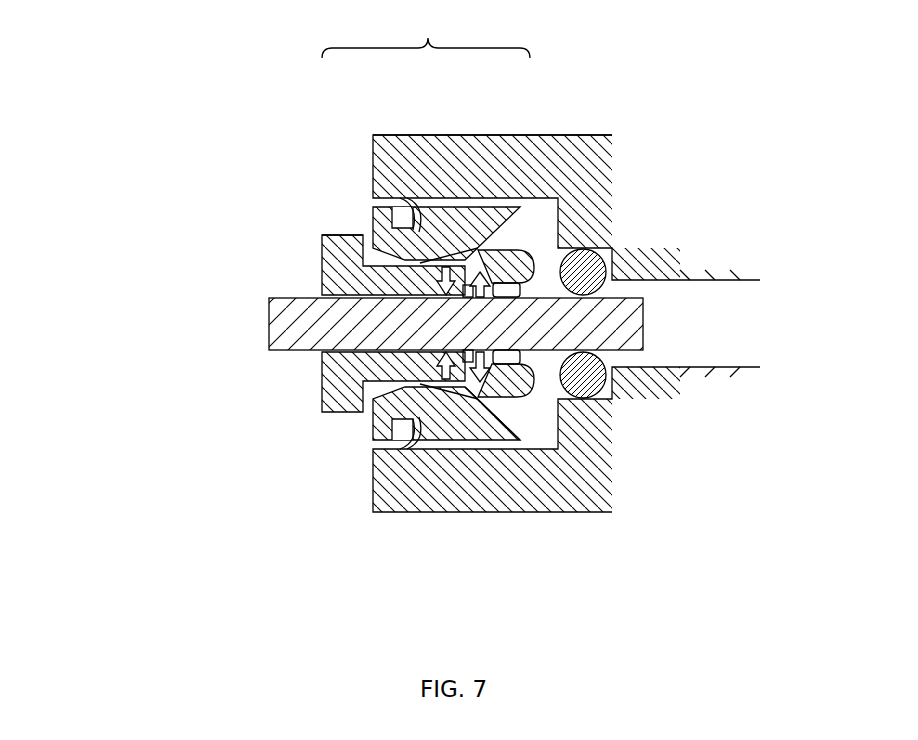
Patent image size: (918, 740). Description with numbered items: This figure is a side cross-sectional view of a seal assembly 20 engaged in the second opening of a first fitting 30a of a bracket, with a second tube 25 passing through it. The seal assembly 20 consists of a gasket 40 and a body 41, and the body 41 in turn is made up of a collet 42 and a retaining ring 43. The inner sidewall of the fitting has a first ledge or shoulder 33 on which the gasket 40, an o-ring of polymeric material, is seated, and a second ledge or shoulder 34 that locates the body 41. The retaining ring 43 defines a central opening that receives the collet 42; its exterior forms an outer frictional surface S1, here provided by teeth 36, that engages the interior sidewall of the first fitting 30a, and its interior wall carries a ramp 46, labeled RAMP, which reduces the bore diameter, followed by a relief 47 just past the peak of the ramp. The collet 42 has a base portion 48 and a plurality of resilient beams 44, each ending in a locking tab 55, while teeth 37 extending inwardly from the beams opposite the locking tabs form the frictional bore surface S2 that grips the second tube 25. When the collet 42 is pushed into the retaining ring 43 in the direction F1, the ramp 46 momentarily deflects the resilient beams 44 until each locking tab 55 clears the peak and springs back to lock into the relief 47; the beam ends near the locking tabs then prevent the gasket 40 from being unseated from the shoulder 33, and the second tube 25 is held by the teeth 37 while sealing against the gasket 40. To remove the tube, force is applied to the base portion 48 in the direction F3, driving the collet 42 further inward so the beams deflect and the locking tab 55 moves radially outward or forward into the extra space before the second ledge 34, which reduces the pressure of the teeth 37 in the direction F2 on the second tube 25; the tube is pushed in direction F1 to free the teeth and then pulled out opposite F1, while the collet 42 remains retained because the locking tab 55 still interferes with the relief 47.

The seal assembly 20 is at (552, 212).
The second tube 25 is at (272, 306).
The first fitting 30a is at (397, 128).
The first ledge or shoulder 33 is at (583, 402).
The second ledge or shoulder 34 is at (448, 455).
The teeth 36 is at (372, 444).
The teeth 37 is at (607, 262).
The gasket 40 is at (605, 383).
The body 41 is at (426, 33).
The collet 42 is at (338, 245).
The retaining ring 43 is at (480, 215).
The resilient beams 44 is at (472, 292).
The ramp 46 is at (373, 234).
The relief 47 is at (498, 430).
The base portion 48 is at (322, 266).
The locking tab 55 is at (520, 256).
The insertion direction F1 is at (296, 383).
The teeth pressure direction F2 is at (470, 352).
The release force direction F3 is at (210, 323).
The outer frictional surface S1 is at (403, 446).
The frictional bore surface S2 is at (521, 357).
The ramp RAMP is at (510, 447).